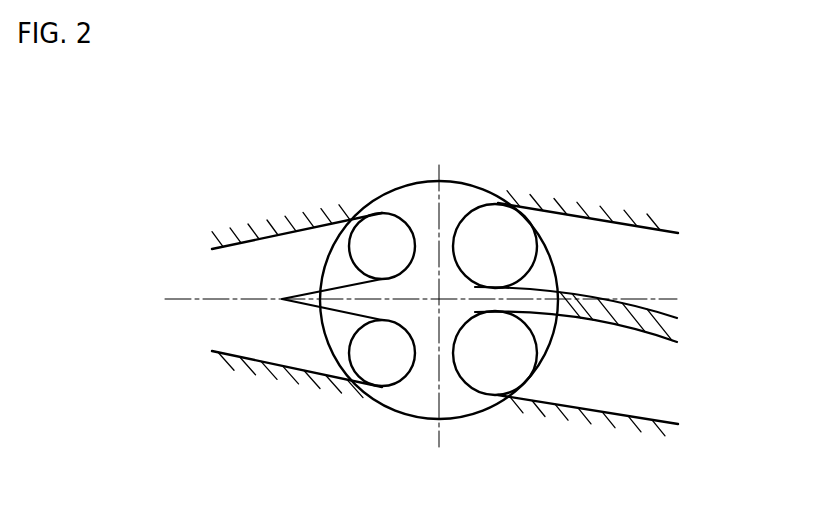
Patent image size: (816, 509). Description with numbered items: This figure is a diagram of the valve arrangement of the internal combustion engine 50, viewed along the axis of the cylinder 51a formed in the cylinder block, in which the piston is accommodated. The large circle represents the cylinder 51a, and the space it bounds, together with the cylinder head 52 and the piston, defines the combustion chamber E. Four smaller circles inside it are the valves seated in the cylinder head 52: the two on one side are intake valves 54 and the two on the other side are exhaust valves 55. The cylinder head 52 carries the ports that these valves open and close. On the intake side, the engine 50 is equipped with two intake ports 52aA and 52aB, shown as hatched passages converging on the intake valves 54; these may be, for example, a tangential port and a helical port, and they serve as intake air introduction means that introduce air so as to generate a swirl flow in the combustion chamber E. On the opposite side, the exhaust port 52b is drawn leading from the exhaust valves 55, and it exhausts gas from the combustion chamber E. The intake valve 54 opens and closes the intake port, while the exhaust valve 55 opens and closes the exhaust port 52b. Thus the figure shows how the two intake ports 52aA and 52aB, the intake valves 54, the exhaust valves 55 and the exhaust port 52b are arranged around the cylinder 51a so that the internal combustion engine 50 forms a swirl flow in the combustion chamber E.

The internal combustion engine 50 is at (277, 126).
The combustion chamber E is at (425, 206).
The cylinder 51a is at (463, 413).
The cylinder head 52 is at (236, 243).
The exhaust port 52b is at (245, 356).
The intake port 52aA is at (577, 212).
The intake port 52aB is at (562, 394).
The intake valve 54 is at (505, 233).
The exhaust valve 55 is at (378, 232).